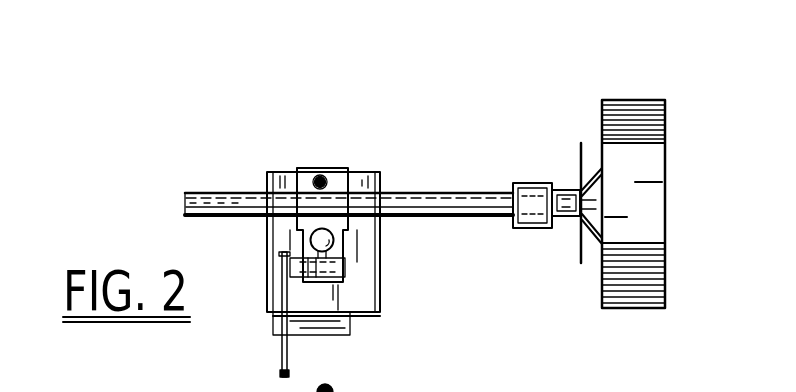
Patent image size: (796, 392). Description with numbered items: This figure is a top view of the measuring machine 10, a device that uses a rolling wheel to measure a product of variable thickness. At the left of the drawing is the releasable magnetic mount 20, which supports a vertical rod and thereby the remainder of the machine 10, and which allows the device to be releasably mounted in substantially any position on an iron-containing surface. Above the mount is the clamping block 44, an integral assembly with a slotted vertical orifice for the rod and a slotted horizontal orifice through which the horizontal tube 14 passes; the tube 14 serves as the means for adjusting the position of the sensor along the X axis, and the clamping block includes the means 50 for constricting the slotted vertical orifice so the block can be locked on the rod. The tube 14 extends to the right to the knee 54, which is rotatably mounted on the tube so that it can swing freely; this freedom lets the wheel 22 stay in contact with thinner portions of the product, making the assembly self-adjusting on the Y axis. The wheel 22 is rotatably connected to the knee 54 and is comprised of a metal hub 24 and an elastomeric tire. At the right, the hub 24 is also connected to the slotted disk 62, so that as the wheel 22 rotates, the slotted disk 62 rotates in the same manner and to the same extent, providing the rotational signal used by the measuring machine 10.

The measuring machine 10 is at (711, 112).
The means for adjusting the position of the sensor in the X axis 14 is at (457, 191).
The releasable magnetic mount 20 is at (367, 272).
The wheel 22 is at (660, 160).
The hub 24 is at (598, 168).
The clamping block 44 is at (310, 168).
The means for constricting slotted vertical orifice 50 is at (282, 360).
The knee 54 is at (531, 229).
The slotted disk 62 is at (579, 171).